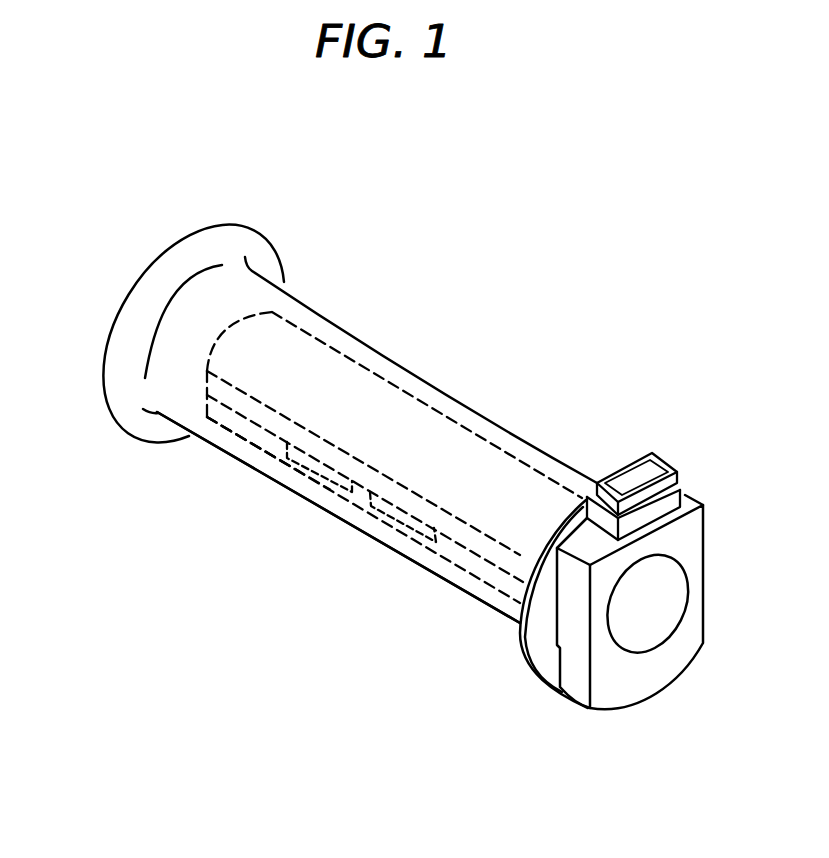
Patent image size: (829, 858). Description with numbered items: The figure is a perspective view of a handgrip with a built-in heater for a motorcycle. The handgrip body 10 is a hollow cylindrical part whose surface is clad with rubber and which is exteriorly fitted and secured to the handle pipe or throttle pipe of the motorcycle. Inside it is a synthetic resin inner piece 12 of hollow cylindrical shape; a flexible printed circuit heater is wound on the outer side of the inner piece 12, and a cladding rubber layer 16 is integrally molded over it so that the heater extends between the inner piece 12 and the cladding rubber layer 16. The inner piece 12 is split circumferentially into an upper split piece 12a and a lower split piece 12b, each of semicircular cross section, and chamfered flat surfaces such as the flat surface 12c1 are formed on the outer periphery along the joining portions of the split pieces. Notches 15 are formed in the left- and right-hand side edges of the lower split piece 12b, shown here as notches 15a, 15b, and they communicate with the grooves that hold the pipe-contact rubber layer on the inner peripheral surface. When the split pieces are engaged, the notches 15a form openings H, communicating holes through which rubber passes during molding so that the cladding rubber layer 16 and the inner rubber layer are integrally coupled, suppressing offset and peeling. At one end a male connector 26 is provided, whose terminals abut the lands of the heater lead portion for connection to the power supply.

The handgrip body 10 is at (466, 383).
The inner piece 12 is at (503, 457).
The upper split piece 12a is at (362, 390).
The lower split piece 12b is at (262, 447).
The chamfered flat surface 12c1 is at (246, 418).
The openings H is at (274, 476).
The notches 15 is at (341, 553).
The notch 15a is at (330, 474).
The notch 15b is at (403, 530).
The cladding rubber layer 16 is at (373, 538).
The male connector 26 is at (651, 468).